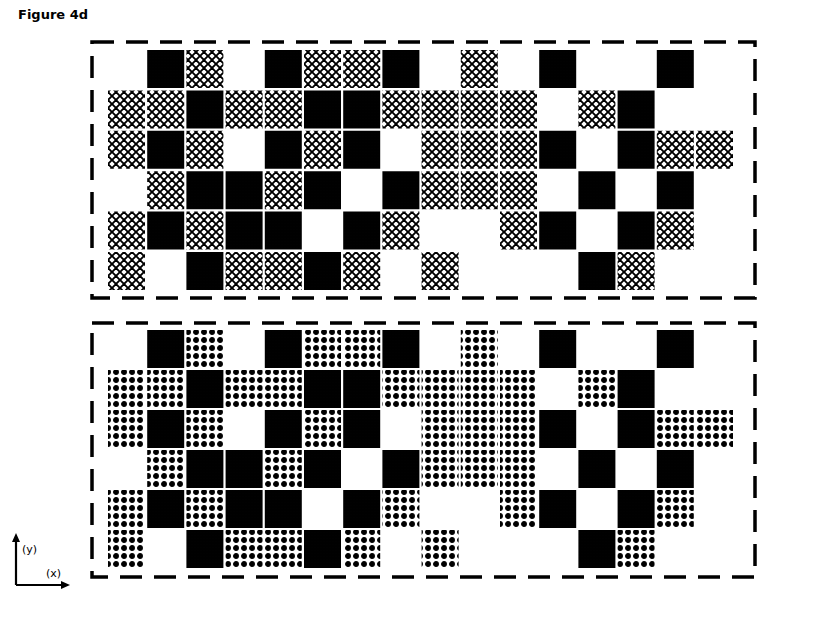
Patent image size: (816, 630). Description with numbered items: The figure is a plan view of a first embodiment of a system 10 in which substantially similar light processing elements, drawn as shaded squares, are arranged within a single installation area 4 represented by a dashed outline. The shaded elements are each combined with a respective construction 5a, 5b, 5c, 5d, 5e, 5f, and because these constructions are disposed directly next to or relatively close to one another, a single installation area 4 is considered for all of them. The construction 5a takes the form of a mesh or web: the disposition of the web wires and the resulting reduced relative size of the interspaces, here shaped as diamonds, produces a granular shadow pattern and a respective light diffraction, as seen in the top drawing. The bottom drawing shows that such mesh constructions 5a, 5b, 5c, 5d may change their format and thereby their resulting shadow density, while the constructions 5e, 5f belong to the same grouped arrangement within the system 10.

The system 10 is at (402, 305).
The installation area 4 is at (381, 269).
The construction 5a is at (370, 249).
The construction 5b is at (409, 289).
The construction 5c is at (389, 360).
The construction 5d is at (370, 410).
The construction 5e is at (163, 117).
The construction 5f is at (162, 158).